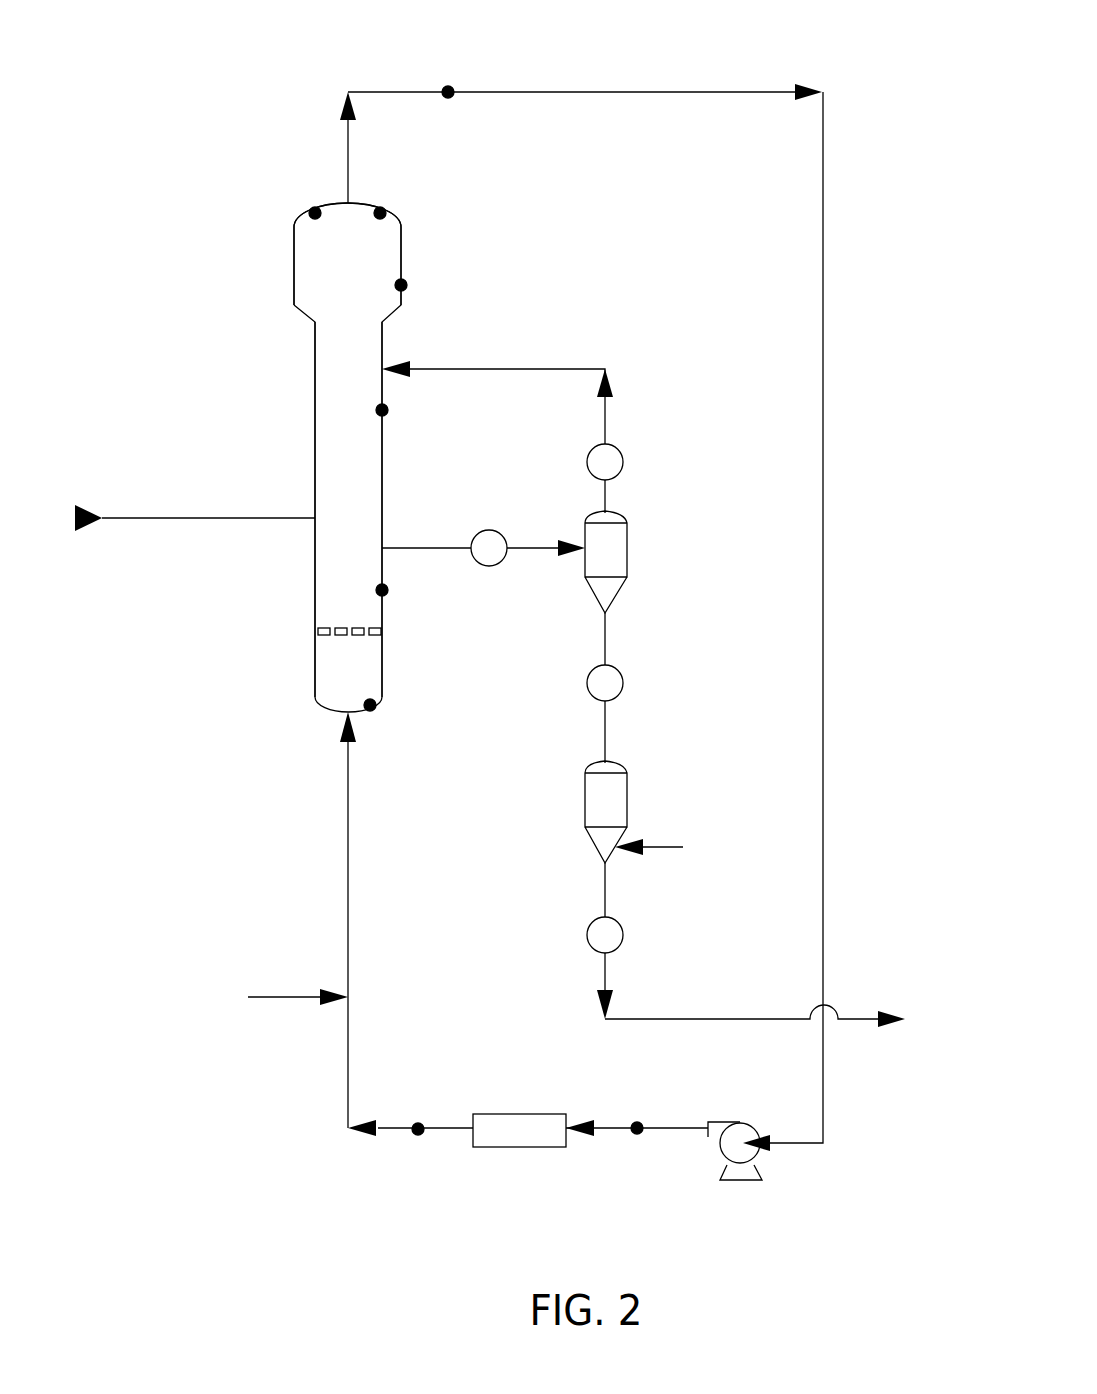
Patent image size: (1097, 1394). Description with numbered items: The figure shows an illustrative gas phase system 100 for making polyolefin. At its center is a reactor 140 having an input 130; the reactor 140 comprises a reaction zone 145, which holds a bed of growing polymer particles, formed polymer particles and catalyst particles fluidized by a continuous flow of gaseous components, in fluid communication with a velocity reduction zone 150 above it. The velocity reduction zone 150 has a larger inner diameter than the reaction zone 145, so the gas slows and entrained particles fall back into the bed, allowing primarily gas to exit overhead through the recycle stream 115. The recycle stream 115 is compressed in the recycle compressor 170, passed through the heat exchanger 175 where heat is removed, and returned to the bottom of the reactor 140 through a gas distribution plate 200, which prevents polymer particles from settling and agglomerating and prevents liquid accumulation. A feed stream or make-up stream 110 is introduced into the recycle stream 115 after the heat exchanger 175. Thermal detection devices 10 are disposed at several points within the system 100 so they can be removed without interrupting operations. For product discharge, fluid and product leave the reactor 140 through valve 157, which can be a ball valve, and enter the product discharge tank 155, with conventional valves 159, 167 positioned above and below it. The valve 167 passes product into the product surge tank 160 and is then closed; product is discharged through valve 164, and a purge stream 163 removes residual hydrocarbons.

The gas phase system 100 is at (232, 55).
The thermal detection device 10 is at (447, 86).
The feed stream or make-up stream 110 is at (288, 993).
The recycle stream 115 is at (675, 95).
The input 130 is at (140, 518).
The reactor 140 is at (337, 390).
The reaction zone 145 is at (315, 450).
The velocity reduction zone 150 is at (402, 253).
The product discharge tank 155 is at (628, 558).
The valve 157 is at (488, 528).
The valve 159 is at (623, 458).
The product surge tank 160 is at (585, 800).
The purge stream 163 is at (664, 848).
The valve 164 is at (587, 935).
The valve 167 is at (587, 680).
The recycle compressor 170 is at (745, 1182).
The heat exchanger 175 is at (528, 1147).
The gas distribution plate 200 is at (315, 631).